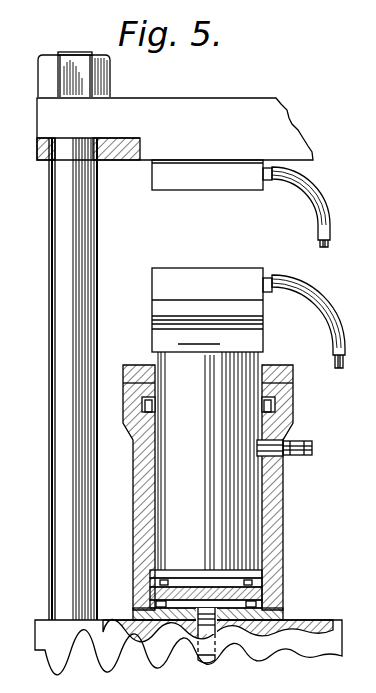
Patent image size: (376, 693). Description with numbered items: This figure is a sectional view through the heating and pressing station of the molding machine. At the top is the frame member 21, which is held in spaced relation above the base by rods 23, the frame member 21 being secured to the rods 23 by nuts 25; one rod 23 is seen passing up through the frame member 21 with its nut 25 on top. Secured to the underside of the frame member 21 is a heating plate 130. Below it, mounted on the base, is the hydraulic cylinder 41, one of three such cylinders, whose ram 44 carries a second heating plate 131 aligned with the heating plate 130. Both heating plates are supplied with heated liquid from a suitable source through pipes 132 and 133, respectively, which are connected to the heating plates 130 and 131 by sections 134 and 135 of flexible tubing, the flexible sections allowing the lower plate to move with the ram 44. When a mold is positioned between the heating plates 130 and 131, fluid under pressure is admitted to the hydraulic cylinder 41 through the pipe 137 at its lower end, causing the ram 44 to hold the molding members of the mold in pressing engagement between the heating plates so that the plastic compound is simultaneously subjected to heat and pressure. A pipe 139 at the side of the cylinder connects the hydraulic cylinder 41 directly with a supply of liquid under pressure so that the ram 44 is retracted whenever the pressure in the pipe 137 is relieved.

The frame member 21 is at (221, 112).
The rods 23 is at (64, 432).
The nuts 25 is at (48, 60).
The hydraulic cylinder 41 is at (278, 548).
The ram 44 is at (208, 461).
The heating plate 130 is at (157, 178).
The heating plate 131 is at (203, 278).
The pipe 132 is at (329, 240).
The pipe 133 is at (334, 355).
The section of flexible tubing 134 is at (318, 188).
The section of flexible tubing 135 is at (288, 290).
The pipe 137 is at (198, 658).
The pipe 139 is at (293, 443).